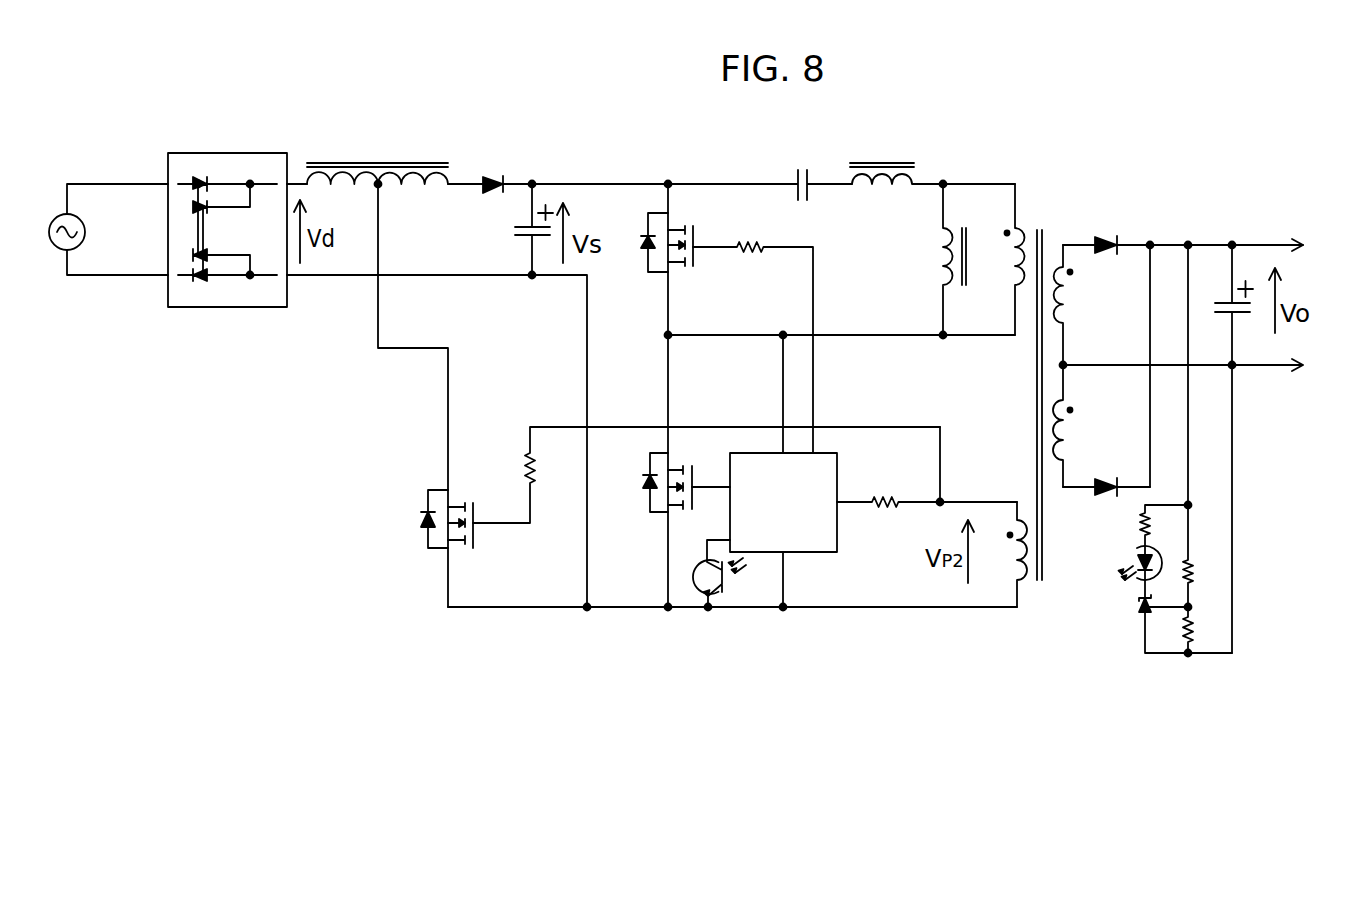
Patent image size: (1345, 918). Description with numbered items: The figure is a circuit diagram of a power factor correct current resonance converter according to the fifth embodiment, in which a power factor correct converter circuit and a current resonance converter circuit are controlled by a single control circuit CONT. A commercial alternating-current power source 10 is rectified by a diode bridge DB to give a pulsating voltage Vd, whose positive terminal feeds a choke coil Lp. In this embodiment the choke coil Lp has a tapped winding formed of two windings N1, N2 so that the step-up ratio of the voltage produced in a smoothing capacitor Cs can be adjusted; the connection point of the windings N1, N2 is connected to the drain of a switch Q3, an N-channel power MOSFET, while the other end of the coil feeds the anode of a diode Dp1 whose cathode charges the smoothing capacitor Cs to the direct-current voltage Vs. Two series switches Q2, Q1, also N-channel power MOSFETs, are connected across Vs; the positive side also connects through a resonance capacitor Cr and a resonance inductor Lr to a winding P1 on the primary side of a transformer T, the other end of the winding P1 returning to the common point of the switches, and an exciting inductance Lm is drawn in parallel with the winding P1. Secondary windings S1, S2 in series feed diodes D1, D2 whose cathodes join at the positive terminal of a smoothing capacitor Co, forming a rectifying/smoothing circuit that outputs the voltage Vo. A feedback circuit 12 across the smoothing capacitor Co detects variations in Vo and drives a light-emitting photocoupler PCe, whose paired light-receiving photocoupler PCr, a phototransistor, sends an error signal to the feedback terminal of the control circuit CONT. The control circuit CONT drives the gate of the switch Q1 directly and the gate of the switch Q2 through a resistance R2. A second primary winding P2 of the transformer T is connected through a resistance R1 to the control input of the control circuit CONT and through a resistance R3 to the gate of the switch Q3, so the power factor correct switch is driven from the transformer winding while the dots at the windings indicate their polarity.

The commercial alternating-current power source 10 is at (57, 213).
The feedback circuit 12 is at (1212, 555).
The diode bridge DB is at (227, 212).
The choke coil Lp is at (367, 175).
The winding N1 is at (342, 197).
The winding N2 is at (413, 198).
The diode Dp1 is at (490, 165).
The smoothing capacitor Cs is at (521, 230).
The switch Q2 is at (677, 258).
The resistance R2 is at (753, 330).
The resonance capacitor Cr is at (760, 170).
The resonance inductor Lr is at (932, 159).
The exciting inductance Lm is at (938, 260).
The transformer T is at (1042, 395).
The winding P1 is at (1004, 259).
The second winding P2 is at (1003, 554).
The winding S1 is at (1077, 305).
The winding S2 is at (1079, 426).
The diode D1 is at (1183, 230).
The diode D2 is at (1106, 472).
The smoothing capacitor Co is at (1225, 449).
The photocoupler on light-emitting side PCe is at (1119, 569).
The photocoupler on light-receiving side PCr is at (719, 594).
The switch Q1 is at (686, 471).
The switch Q3 is at (455, 509).
The resistance R1 is at (927, 486).
The resistance R3 is at (706, 475).
The control circuit CONT is at (783, 471).